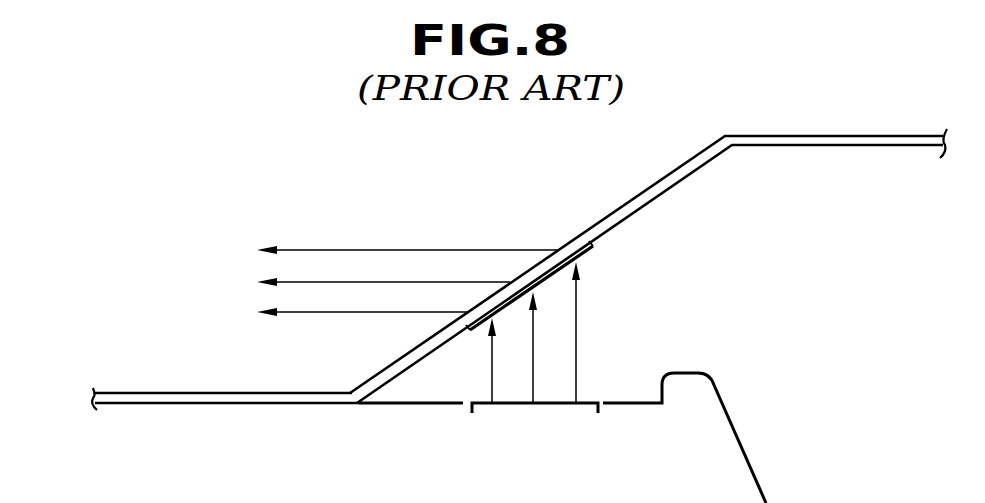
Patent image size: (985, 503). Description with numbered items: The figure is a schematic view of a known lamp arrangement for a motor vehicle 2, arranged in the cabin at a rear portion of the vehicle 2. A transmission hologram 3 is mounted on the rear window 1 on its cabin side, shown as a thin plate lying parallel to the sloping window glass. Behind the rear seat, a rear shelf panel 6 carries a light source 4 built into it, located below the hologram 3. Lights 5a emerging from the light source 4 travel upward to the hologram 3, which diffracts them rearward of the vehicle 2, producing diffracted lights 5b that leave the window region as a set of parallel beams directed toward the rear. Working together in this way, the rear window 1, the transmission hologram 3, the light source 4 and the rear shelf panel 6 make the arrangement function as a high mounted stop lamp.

The rear window 1 is at (643, 198).
The motor vehicle 2 is at (338, 405).
The transmission hologram 3 is at (597, 248).
The light source 4 is at (567, 405).
The lights 5a is at (550, 332).
The diffracted lights 5b is at (407, 267).
The rear shelf panel 6 is at (638, 405).